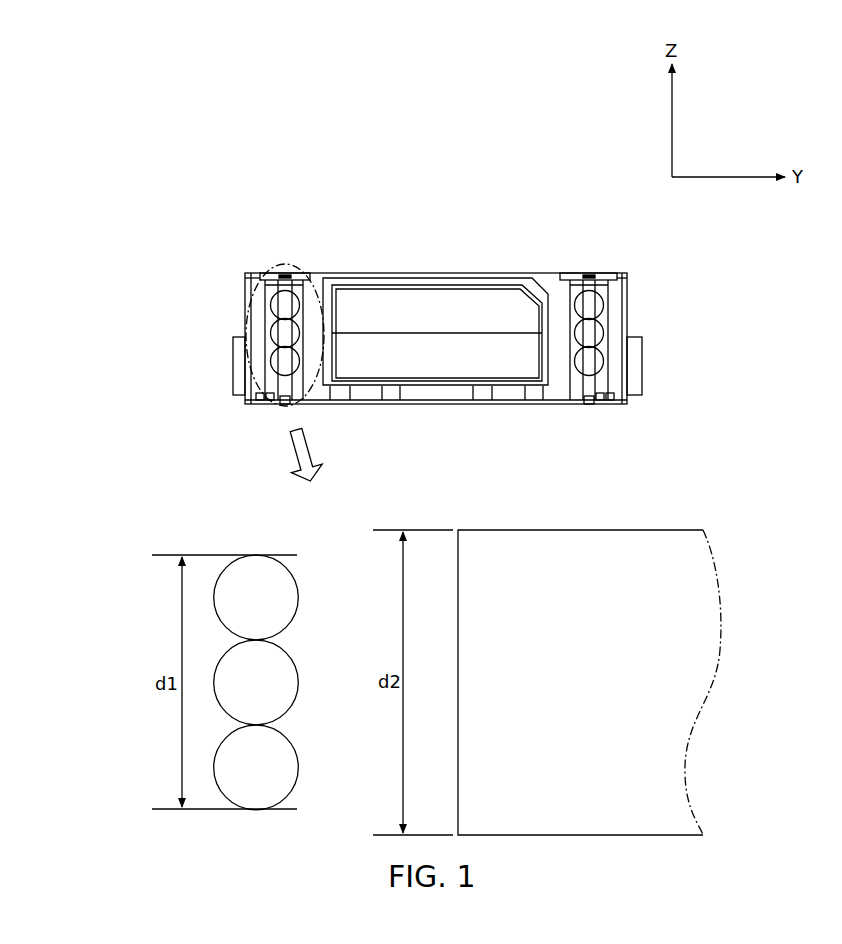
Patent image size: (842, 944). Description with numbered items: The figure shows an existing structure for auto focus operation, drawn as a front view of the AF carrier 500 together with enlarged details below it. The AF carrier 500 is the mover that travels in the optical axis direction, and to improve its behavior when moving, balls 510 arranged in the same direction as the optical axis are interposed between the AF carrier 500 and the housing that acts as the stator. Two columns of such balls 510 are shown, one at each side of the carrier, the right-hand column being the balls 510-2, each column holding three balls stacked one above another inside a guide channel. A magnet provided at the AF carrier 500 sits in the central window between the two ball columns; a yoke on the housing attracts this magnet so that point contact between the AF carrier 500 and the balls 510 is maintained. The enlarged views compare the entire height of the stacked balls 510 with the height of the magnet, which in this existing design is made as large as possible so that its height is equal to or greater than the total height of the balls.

The AF carrier 500 is at (397, 270).
The ball 510 is at (440, 335).
The ball 510-2 is at (590, 338).